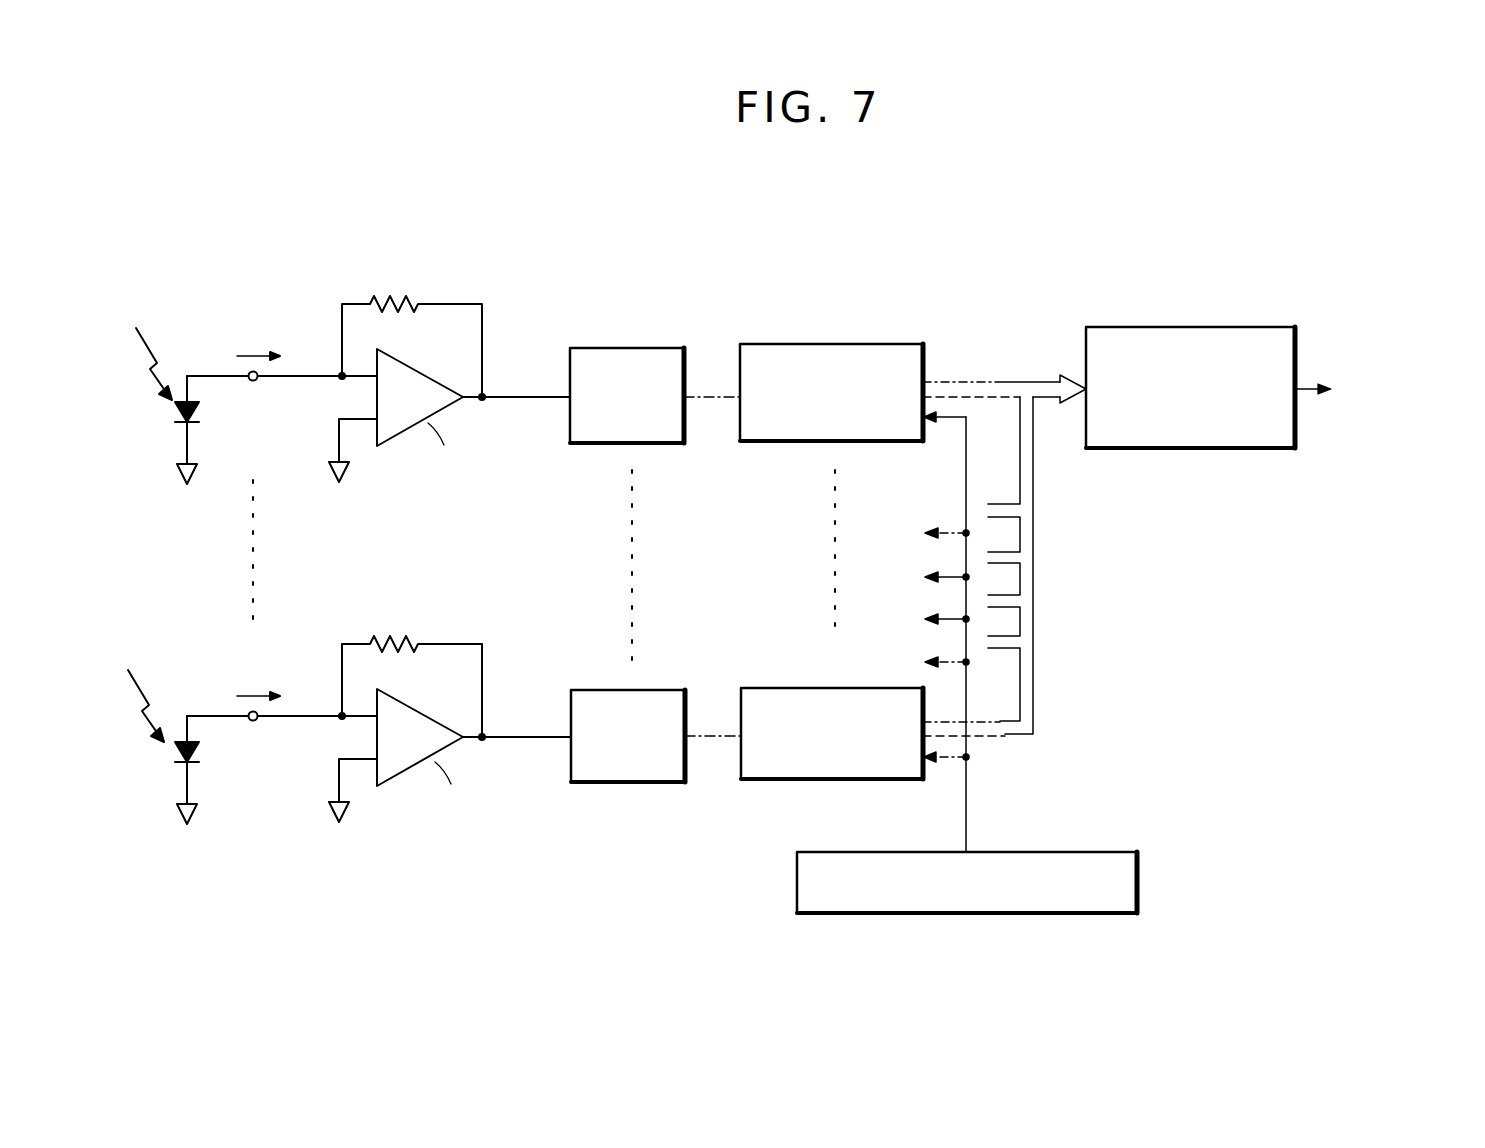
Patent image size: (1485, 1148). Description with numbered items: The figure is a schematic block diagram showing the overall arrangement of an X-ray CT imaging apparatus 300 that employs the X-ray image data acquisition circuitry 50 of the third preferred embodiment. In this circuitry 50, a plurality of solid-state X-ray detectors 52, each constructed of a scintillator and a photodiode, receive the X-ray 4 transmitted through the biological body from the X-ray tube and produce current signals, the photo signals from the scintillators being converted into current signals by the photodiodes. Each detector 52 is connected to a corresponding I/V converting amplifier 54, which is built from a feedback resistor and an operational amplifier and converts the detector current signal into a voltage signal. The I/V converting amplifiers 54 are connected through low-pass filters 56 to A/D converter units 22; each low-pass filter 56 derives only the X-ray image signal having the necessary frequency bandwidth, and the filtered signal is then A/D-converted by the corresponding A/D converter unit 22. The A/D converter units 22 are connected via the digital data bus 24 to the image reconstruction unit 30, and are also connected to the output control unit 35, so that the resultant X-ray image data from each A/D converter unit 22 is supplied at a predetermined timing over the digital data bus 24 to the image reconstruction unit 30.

The X-ray CT imaging apparatus 300 is at (1172, 178).
The data acquisition circuitry 50 is at (920, 213).
The X-ray 4 is at (149, 516).
The solid-state X-ray detectors 52 is at (201, 410).
The I/V converting amplifiers 54 is at (391, 532).
The low-pass filters 56 is at (656, 348).
The A/D converter units 22 is at (875, 346).
The digital data bus 24 is at (993, 378).
The output control unit 35 is at (1110, 850).
The image reconstruction unit 30 is at (1230, 327).